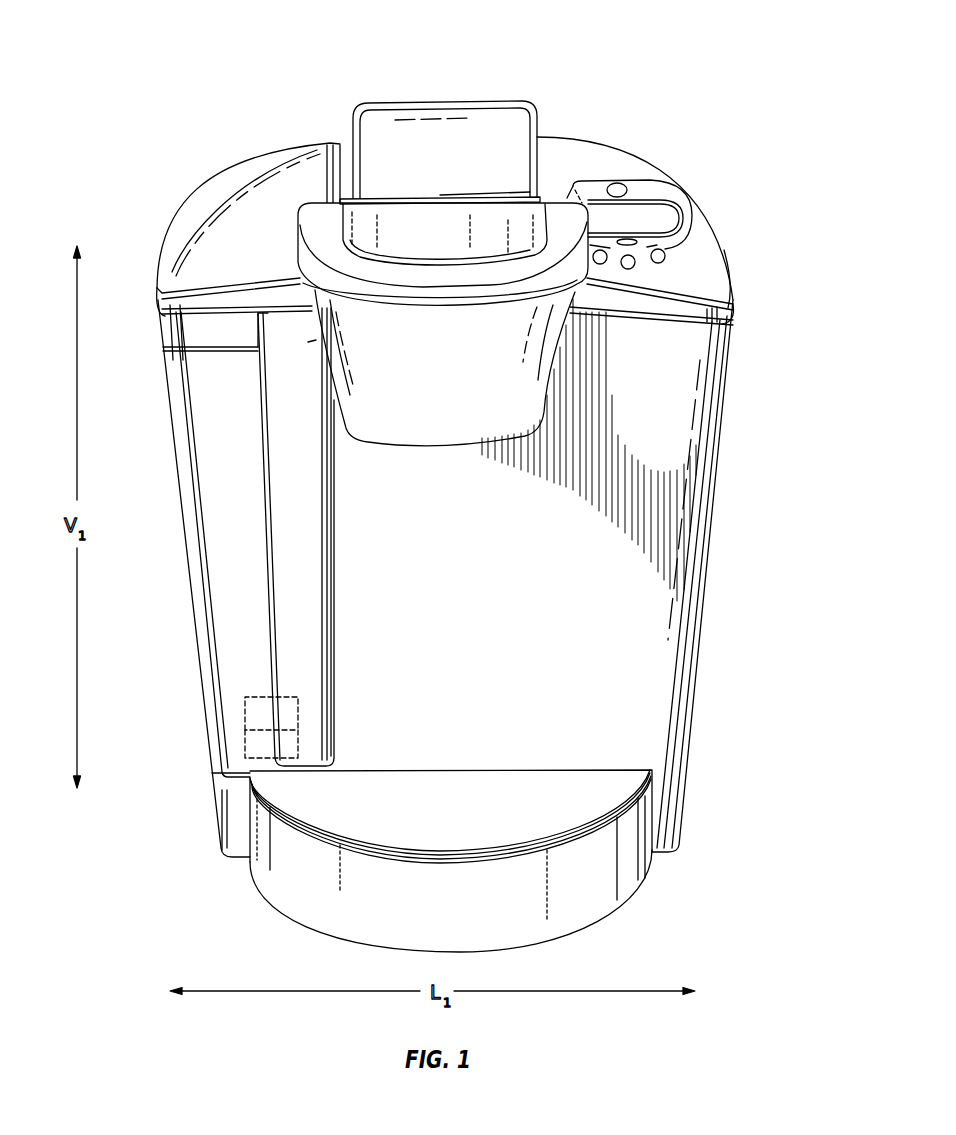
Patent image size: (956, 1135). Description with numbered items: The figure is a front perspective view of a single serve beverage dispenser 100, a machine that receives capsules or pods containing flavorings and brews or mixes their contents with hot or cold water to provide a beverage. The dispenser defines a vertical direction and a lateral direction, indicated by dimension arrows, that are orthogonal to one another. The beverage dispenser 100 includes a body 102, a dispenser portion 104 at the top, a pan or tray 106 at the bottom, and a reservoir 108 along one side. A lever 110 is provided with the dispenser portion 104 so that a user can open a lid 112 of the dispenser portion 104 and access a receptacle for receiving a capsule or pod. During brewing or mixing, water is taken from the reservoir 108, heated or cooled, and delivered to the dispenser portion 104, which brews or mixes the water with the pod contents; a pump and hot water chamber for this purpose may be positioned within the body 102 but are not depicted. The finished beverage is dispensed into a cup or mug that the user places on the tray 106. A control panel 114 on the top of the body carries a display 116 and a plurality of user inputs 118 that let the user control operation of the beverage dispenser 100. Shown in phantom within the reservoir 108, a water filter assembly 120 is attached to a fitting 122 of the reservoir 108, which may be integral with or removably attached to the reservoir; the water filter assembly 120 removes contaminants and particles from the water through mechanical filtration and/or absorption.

The beverage dispenser 100 is at (450, 486).
The body 102 is at (680, 417).
The dispenser portion 104 is at (478, 142).
The tray 106 is at (627, 850).
The reservoir 108 is at (208, 519).
The lever 110 is at (535, 292).
The lid 112 is at (393, 227).
The control panel 114 is at (700, 162).
The display 116 is at (652, 212).
The user inputs 118 is at (668, 255).
The water filter assembly 120 is at (243, 708).
The fitting 122 is at (240, 745).